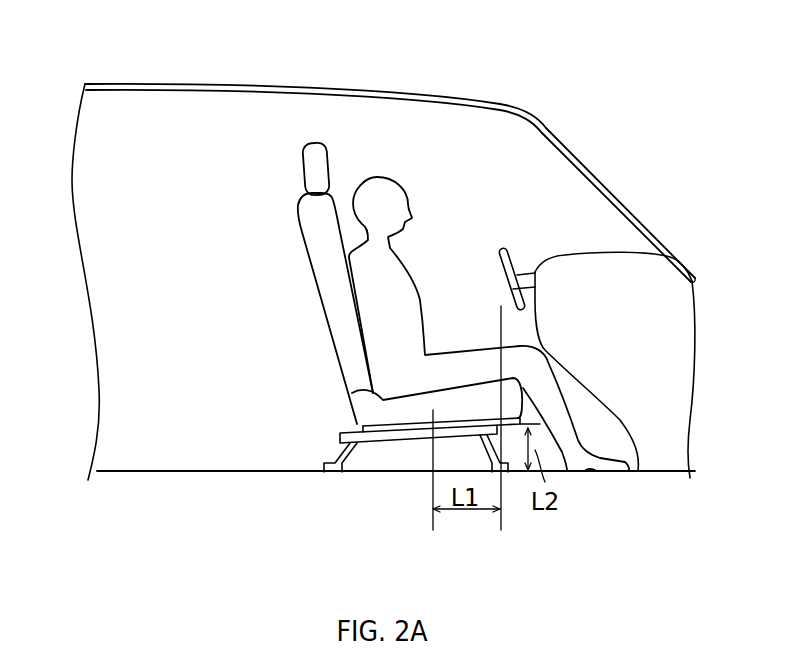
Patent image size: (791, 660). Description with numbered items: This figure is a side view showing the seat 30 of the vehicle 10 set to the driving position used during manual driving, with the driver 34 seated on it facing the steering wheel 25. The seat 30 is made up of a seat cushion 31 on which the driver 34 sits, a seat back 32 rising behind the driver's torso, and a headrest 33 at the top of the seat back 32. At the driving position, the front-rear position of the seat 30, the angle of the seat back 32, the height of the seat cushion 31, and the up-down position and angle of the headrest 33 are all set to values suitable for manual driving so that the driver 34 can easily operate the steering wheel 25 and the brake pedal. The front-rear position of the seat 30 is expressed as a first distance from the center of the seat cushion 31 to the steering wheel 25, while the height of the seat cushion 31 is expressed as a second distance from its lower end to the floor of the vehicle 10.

The vehicle 10 is at (277, 63).
The steering wheel 25 is at (520, 246).
The seat 30 is at (407, 535).
The seat cushion 31 is at (387, 415).
The seat back 32 is at (317, 303).
The headrest 33 is at (300, 178).
The driver 34 is at (389, 176).